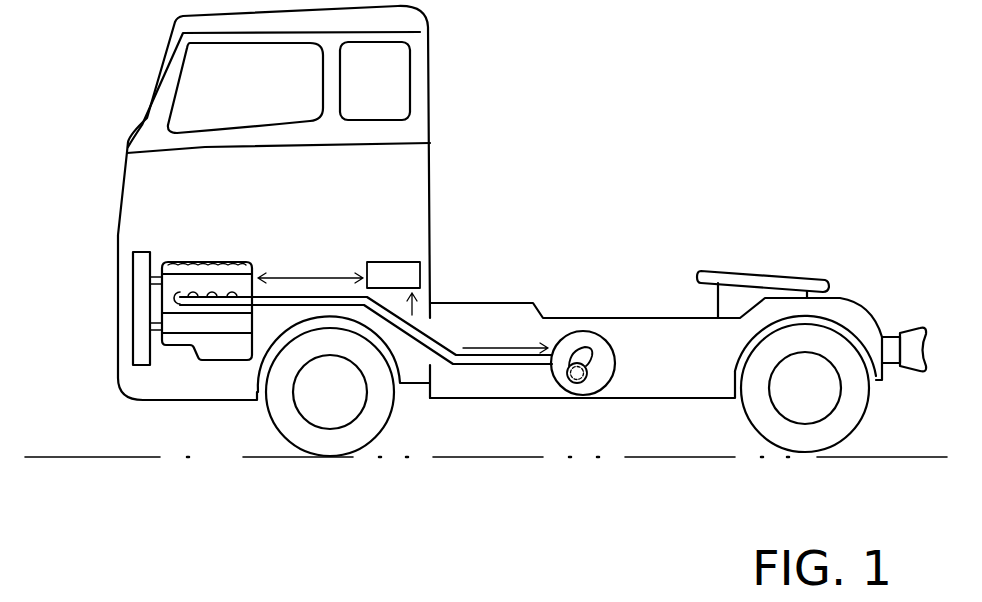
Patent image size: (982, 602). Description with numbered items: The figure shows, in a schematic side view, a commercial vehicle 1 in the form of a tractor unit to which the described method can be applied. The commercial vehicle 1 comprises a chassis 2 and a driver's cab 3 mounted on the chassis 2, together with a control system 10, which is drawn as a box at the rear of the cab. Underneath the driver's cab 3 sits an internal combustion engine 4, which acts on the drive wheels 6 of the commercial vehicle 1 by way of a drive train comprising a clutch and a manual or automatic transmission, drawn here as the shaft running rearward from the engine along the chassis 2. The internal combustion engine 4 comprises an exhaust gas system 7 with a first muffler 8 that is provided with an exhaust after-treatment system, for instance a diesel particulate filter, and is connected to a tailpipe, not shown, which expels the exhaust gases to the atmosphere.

The commercial vehicle 1 is at (654, 54).
The chassis 2 is at (615, 265).
The driver's cab 3 is at (162, 203).
The internal combustion engine 4 is at (225, 345).
The drive wheels 6 is at (838, 423).
The exhaust gas system 7 is at (480, 363).
The first muffler 8 is at (590, 375).
The control system 10 is at (395, 262).